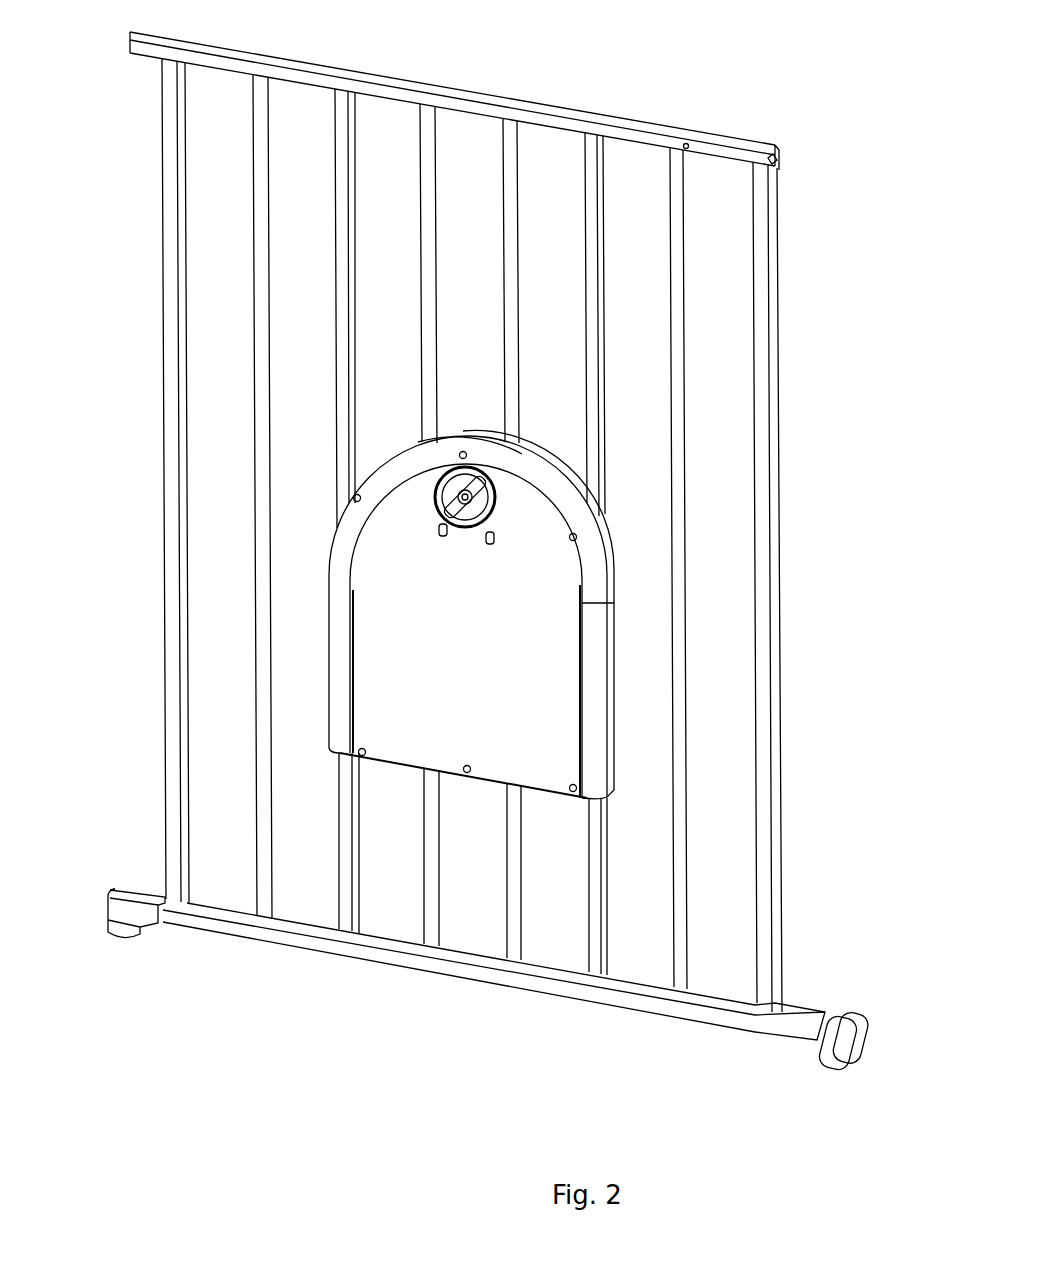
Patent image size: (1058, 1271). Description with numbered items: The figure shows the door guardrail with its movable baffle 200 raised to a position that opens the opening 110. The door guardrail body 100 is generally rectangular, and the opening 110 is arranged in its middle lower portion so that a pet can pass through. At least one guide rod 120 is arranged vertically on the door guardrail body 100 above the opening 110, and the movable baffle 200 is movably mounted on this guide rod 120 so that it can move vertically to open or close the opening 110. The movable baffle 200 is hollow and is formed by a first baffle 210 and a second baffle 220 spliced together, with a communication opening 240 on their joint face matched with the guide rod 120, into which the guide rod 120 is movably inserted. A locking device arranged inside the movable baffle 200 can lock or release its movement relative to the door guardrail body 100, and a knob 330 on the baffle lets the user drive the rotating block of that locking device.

The door guardrail body 100 is at (497, 553).
The opening 110 is at (438, 842).
The guide rod 120 is at (428, 308).
The movable baffle 200 is at (495, 520).
The first baffle 210 is at (311, 632).
The second baffle 220 is at (578, 500).
The communication opening 240 is at (420, 440).
The knob 330 is at (447, 498).